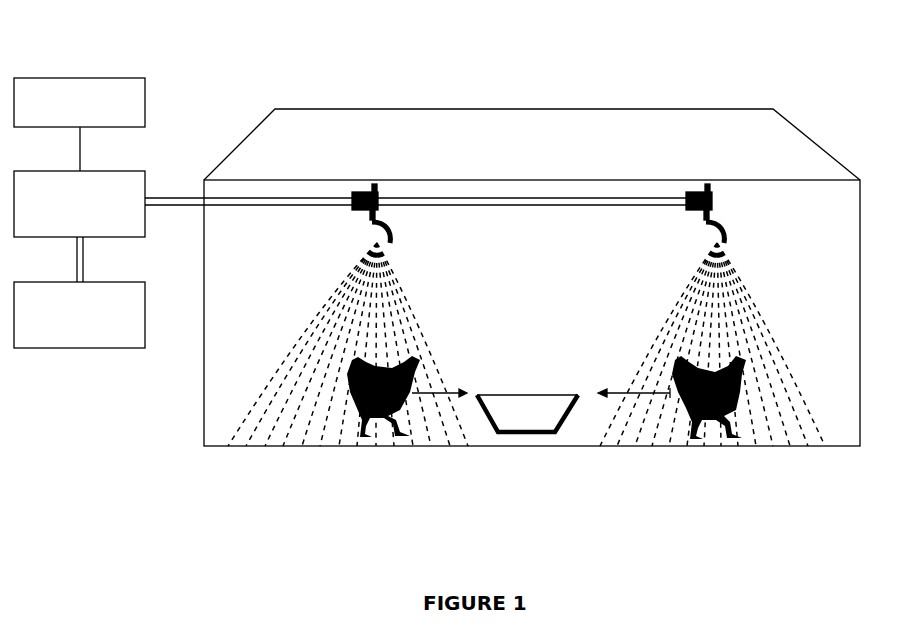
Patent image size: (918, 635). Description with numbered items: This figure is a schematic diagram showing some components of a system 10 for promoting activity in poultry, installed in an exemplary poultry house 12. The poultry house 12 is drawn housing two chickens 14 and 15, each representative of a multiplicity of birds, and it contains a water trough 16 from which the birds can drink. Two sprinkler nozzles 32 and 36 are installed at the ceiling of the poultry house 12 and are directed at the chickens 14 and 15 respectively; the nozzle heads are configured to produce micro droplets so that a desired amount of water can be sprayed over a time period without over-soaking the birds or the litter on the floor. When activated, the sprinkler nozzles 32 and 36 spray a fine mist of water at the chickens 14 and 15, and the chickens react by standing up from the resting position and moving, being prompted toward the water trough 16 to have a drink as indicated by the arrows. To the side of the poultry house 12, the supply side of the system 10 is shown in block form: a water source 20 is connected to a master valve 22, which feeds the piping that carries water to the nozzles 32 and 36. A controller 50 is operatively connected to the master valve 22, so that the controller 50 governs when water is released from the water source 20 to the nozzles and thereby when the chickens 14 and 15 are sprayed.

The system for promoting activity in poultry 10 is at (627, 41).
The poultry house 12 is at (692, 109).
The chicken 14 is at (352, 418).
The chicken 15 is at (742, 403).
The water trough 16 is at (517, 432).
The water source 20 is at (60, 348).
The master valve 22 is at (100, 171).
The sprinkler nozzle 32 is at (385, 215).
The sprinkler nozzle 36 is at (715, 197).
The controller 50 is at (82, 78).